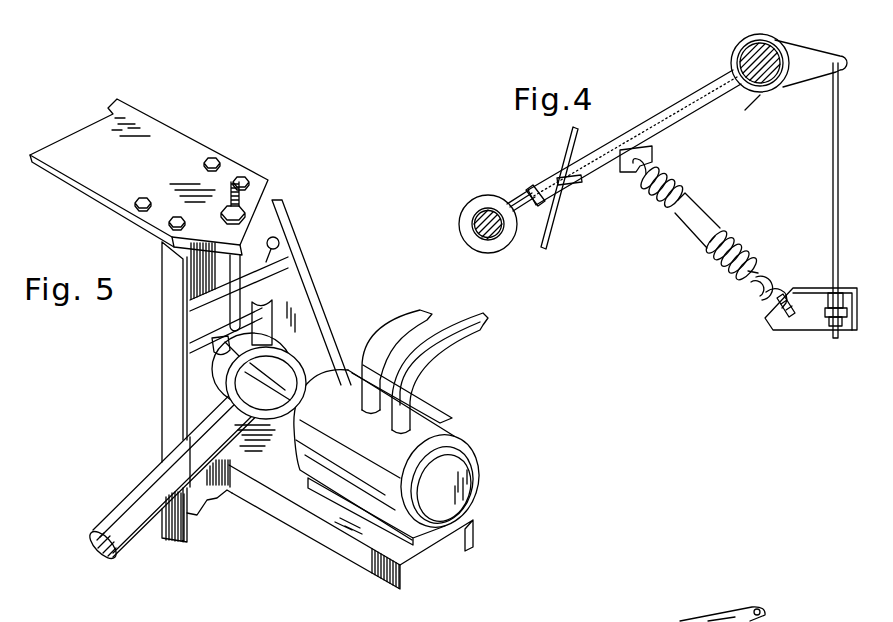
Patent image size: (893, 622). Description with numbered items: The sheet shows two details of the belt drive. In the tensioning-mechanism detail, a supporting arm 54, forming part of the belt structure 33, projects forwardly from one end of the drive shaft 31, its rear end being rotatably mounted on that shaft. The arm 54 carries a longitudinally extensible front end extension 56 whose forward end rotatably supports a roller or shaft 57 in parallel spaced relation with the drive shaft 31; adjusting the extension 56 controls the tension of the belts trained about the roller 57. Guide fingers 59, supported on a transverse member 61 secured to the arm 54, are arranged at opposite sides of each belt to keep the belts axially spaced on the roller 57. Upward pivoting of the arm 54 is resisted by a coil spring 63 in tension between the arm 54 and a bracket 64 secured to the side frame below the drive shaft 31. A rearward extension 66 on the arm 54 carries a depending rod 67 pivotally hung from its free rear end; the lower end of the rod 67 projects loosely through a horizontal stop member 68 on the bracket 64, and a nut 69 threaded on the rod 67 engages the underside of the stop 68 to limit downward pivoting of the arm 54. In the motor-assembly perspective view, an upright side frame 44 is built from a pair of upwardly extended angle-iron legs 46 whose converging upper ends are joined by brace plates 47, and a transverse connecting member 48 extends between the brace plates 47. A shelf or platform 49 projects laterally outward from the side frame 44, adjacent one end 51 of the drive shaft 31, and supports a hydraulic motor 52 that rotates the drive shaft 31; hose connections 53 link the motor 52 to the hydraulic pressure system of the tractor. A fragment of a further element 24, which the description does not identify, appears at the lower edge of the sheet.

In FIG. 4, the lever arm 24 is at (730, 616).
In FIG. 5, the drive shaft 31 is at (306, 403).
In FIG. 4, the drive shaft 31 is at (763, 48).
In FIG. 4, the belt structure 33 is at (664, 96).
In FIG. 5, the upright side frame 44 is at (193, 315).
In FIG. 5, the legs 46 is at (165, 382).
In FIG. 5, the brace plates 47 is at (254, 258).
In FIG. 5, the transverse connecting member 48 is at (178, 146).
In FIG. 5, the shelf or platform 49 is at (315, 538).
In FIG. 5, the end of the drive shaft 51 is at (270, 328).
In FIG. 5, the hydraulic motor 52 is at (465, 447).
In FIG. 5, the hose connections 53 is at (400, 322).
In FIG. 5, the supporting arm 54 is at (130, 543).
In FIG. 4, the supporting arm 54 is at (680, 124).
In FIG. 4, the front end extension 56 is at (513, 196).
In FIG. 4, the roller or shaft 57 is at (483, 208).
In FIG. 4, the guide fingers 59 is at (568, 149).
In FIG. 4, the transverse member 61 is at (577, 183).
In FIG. 4, the coil spring 63 is at (711, 262).
In FIG. 4, the bracket 64 is at (815, 323).
In FIG. 5, the rearward extension 66 is at (303, 385).
In FIG. 4, the rearward extension 66 is at (824, 58).
In FIG. 4, the depending rod 67 is at (832, 212).
In FIG. 4, the horizontal stop member 68 is at (840, 292).
In FIG. 4, the nut 69 is at (842, 332).